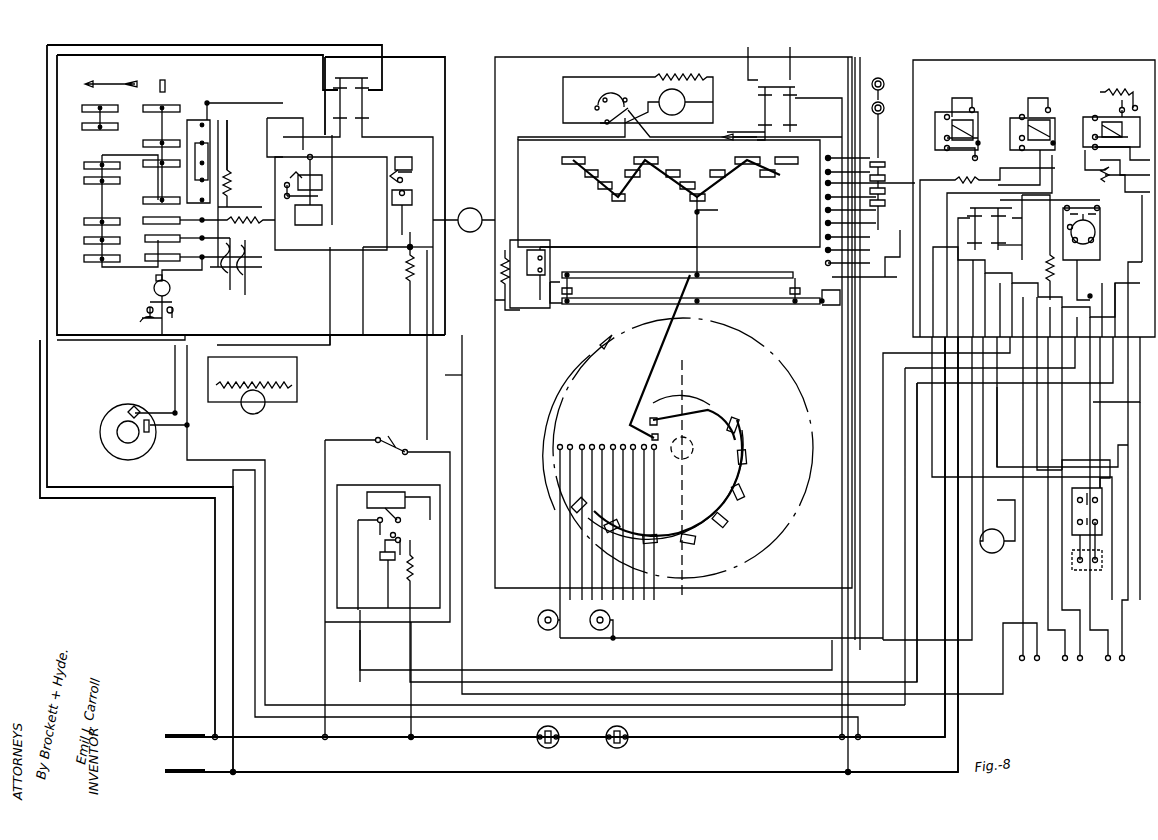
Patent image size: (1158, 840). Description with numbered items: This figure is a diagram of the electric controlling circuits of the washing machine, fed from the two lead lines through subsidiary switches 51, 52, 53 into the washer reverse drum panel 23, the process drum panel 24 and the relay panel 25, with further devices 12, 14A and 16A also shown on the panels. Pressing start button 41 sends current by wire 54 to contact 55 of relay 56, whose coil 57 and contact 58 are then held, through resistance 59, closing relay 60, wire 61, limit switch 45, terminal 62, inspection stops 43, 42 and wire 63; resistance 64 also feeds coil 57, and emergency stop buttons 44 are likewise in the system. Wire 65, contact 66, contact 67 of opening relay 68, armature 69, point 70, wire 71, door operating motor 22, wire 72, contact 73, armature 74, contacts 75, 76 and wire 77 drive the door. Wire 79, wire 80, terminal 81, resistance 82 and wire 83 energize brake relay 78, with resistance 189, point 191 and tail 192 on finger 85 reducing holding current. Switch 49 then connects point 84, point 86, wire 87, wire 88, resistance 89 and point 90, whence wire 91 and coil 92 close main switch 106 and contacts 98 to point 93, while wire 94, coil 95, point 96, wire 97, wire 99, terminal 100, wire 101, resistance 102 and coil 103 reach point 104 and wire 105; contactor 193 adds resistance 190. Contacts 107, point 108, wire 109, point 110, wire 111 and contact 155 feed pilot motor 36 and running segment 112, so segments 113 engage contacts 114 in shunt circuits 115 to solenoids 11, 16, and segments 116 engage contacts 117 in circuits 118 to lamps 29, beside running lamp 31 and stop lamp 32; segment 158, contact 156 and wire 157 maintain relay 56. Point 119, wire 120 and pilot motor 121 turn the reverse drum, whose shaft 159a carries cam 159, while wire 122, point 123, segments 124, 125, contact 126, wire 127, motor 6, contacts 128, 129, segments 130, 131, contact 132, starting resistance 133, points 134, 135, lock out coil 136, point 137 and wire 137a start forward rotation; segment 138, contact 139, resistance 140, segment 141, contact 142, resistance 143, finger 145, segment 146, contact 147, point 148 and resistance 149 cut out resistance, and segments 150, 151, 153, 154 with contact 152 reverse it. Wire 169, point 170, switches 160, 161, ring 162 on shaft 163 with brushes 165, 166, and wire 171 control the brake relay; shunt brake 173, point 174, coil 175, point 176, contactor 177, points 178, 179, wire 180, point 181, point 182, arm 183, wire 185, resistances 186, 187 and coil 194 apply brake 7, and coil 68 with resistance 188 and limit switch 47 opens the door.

The washer cylinder operating motor 6 is at (268, 403).
The brake 7 is at (403, 450).
The solenoid 11 is at (888, 183).
The relay 12 is at (1010, 400).
The relay 14A is at (310, 157).
The solenoid 16 is at (878, 215).
The relay 16A is at (118, 410).
The door operating motor 22 is at (990, 553).
The washer reverse drum panel 23 is at (442, 57).
The process drum panel 24 is at (840, 60).
The relay panel 25 is at (1030, 65).
The indicating lamp 29 is at (600, 632).
The running lamp 31 is at (880, 75).
The idle or stop lamp 32 is at (890, 104).
The pilot motor 36 is at (628, 104).
The start button 41 is at (1085, 488).
The inspection stop button 42 is at (1090, 528).
The inspection stop button 43 is at (1090, 568).
The emergency stop button 44 is at (560, 746).
The limit switch 45 is at (1022, 668).
The limit switch 47 is at (1068, 668).
The limit switch 49 is at (1112, 668).
The subsidiary switch 51 is at (372, 104).
The subsidiary switch 52 is at (760, 112).
The subsidiary switch 53 is at (990, 218).
The wire 54 is at (1010, 452).
The contact 55 is at (1098, 206).
The relay 56 is at (1095, 228).
The coil 57 is at (1090, 248).
The contact 58 is at (1068, 210).
The resistance 59 is at (1058, 175).
The closing relay 60 is at (1035, 118).
The wire 61 is at (1018, 423).
The terminal 62 is at (1065, 320).
The wire 63 is at (932, 480).
The resistance 64 is at (1055, 280).
The wire 65 is at (1055, 197).
The contact 66 is at (1050, 155).
The contact 67 is at (980, 157).
The opening relay 68 is at (960, 115).
The armature 69 is at (980, 118).
The point 70 is at (980, 143).
The wire 71 is at (975, 493).
The wire 72 is at (1125, 275).
The contact 73 is at (1056, 143).
The armature 74 is at (1056, 125).
The contact 75 is at (1050, 110).
The contact 76 is at (972, 110).
The wire 77 is at (880, 215).
The brake relay 78 is at (1125, 118).
The wire 79 is at (1025, 255).
The wire 80 is at (1078, 300).
The terminal 81 is at (1090, 300).
The protecting resistance 82 is at (1125, 186).
The wire 83 is at (1062, 100).
The point 84 is at (1128, 137).
The armature 85 is at (1140, 110).
The point 86 is at (1100, 92).
The wire 87 is at (1093, 402).
The wire 88 is at (435, 425).
The protective resistance 89 is at (405, 275).
The point 90 is at (412, 247).
The wire 91 is at (458, 215).
The coil 92 is at (407, 195).
The point 93 is at (400, 165).
The wire 94 is at (395, 255).
The coil 95 is at (318, 184).
The point 96 is at (228, 172).
The wire 97 is at (378, 157).
The contacts 98 is at (405, 178).
The wire 99 is at (462, 375).
The terminal 100 is at (822, 305).
The wire 101 is at (748, 275).
The resistance 102 is at (505, 300).
The coil 103 is at (552, 305).
The point 104 is at (548, 250).
The wire 105 is at (648, 247).
The main switch 106 is at (402, 158).
The contacts 107 is at (518, 240).
The point 108 is at (528, 312).
The wire 109 is at (518, 172).
The point 110 is at (635, 118).
The wire 111 is at (805, 200).
The running segment 112 is at (770, 302).
The conducting segments 113 is at (722, 180).
The contacts 114 is at (830, 172).
The shunt circuits 115 is at (880, 163).
The segments 116 is at (745, 470).
The contacts 117 is at (605, 440).
The shunt circuits 118 is at (640, 600).
The point 119 is at (398, 232).
The wire 120 is at (463, 232).
The pilot motor 121 is at (472, 207).
The wire 122 is at (283, 118).
The point 123 is at (210, 103).
The segment 124 is at (97, 107).
The segment 125 is at (95, 127).
The contact 126 is at (203, 125).
The wire 127 is at (280, 335).
The contact 128 is at (203, 143).
The contact 129 is at (203, 180).
The segment 130 is at (97, 183).
The segment 131 is at (88, 166).
The contact 132 is at (203, 163).
The starting resistance 133 is at (214, 200).
The point 134 is at (275, 245).
The point 135 is at (292, 220).
The series lock out coil 136 is at (322, 217).
The point 137 is at (318, 200).
The wire 137a is at (318, 108).
The segment 138 is at (88, 222).
The contact 139 is at (185, 231).
The resistance 140 is at (230, 290).
The segment 141 is at (90, 241).
The contact 142 is at (185, 250).
The resistance 143 is at (262, 295).
The contact finger 145 is at (322, 167).
The segment 146 is at (96, 261).
The contact 147 is at (190, 265).
The point 148 is at (270, 270).
The resistance 149 is at (270, 255).
The segment 150 is at (165, 108).
The segment 151 is at (158, 143).
The contact 152 is at (183, 212).
The segment 153 is at (150, 203).
The segment 154 is at (152, 167).
The contact 155 is at (825, 318).
The contact 156 is at (840, 280).
The wire 157 is at (883, 356).
The segment 158 is at (778, 274).
The cam 159 is at (135, 297).
The rotating shaft 159a is at (170, 82).
The switch 160 is at (140, 323).
The switch 161 is at (118, 455).
The conducting ring 162 is at (115, 440).
The washing cylinder shaft 163 is at (110, 432).
The brush 165 is at (140, 455).
The brush 166 is at (135, 412).
The wire 169 is at (255, 520).
The point 170 is at (180, 413).
The wire 171 is at (223, 460).
The shunt brake 173 is at (385, 437).
The point 174 is at (400, 542).
The coil 175 is at (383, 555).
The point 176 is at (400, 518).
The contactor 177 is at (410, 497).
The point 178 is at (372, 492).
The point 179 is at (375, 520).
The wire 180 is at (360, 646).
The point 181 is at (1128, 310).
The point 182 is at (1110, 170).
The arm 183 is at (1125, 148).
The wire 185 is at (1120, 165).
The resistance 186 is at (410, 572).
The resistance 187 is at (395, 490).
The protective resistance 188 is at (975, 160).
The resistance 189 is at (1125, 70).
The resistance 190 is at (520, 200).
The point 191 is at (1095, 115).
The tail 192 is at (1128, 108).
The contactor 193 is at (560, 255).
The coil 194 is at (395, 532).